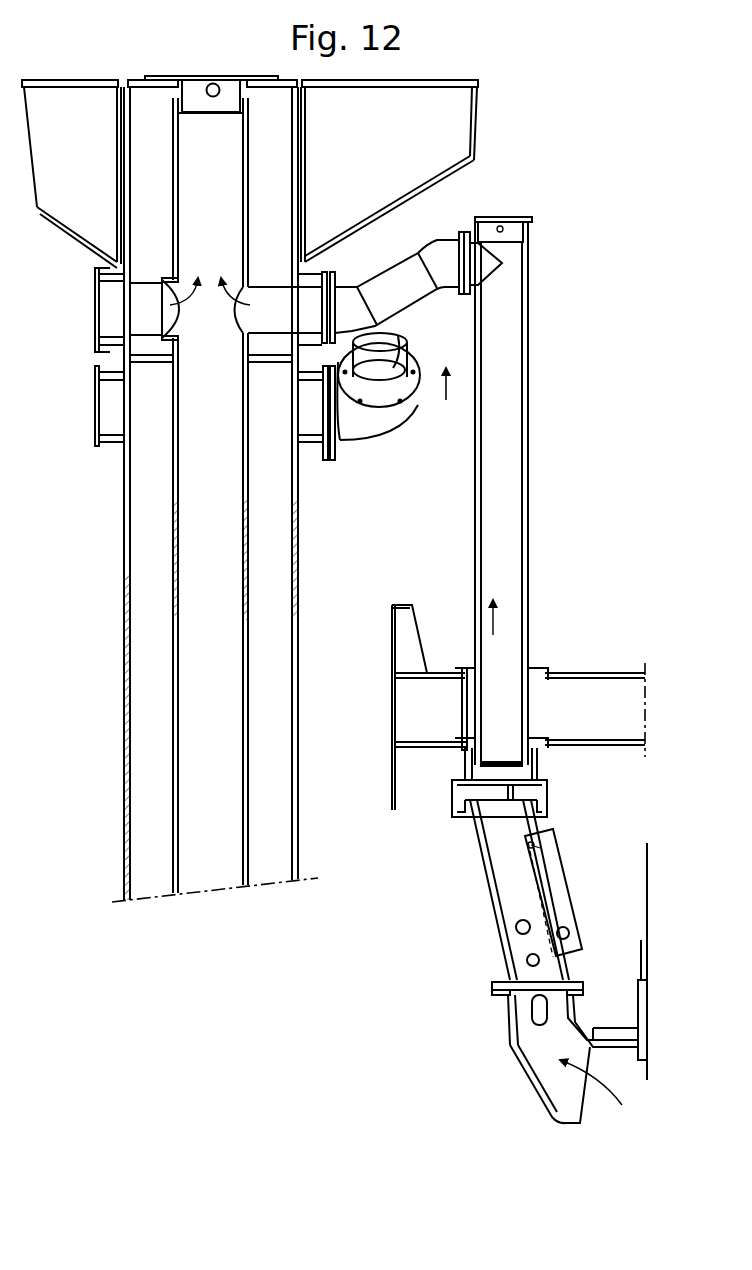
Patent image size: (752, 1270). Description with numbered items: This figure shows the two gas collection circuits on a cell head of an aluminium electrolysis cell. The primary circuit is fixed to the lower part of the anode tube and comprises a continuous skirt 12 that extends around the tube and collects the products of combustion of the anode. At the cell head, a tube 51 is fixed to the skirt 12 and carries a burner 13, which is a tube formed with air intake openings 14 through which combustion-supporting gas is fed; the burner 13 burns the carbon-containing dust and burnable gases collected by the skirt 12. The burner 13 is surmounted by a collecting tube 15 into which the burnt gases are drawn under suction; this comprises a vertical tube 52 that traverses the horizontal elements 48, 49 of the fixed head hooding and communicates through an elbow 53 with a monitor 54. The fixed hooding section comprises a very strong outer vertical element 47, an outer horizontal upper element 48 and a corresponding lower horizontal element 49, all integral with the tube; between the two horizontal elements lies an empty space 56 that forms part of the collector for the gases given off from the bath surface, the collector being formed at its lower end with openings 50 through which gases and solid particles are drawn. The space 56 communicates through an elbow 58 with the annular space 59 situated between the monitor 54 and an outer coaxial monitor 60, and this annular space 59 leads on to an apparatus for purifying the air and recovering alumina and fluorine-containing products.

The skirt 12 is at (530, 1085).
The burner 13 is at (483, 868).
The air intake openings 14 is at (516, 925).
The collecting tube 15 is at (446, 398).
The outer vertical element 47 is at (392, 760).
The outer horizontal upper element 48 is at (593, 676).
The lower horizontal element 49 is at (572, 746).
The openings 50 is at (613, 746).
The tube 51 is at (508, 1015).
The vertical tube 52 is at (528, 558).
The elbow 53 is at (515, 258).
The monitor 54 is at (173, 585).
The space 56 is at (418, 697).
The elbow 58 is at (393, 355).
The annular space 59 is at (145, 548).
The outer coaxial monitor 60 is at (127, 607).